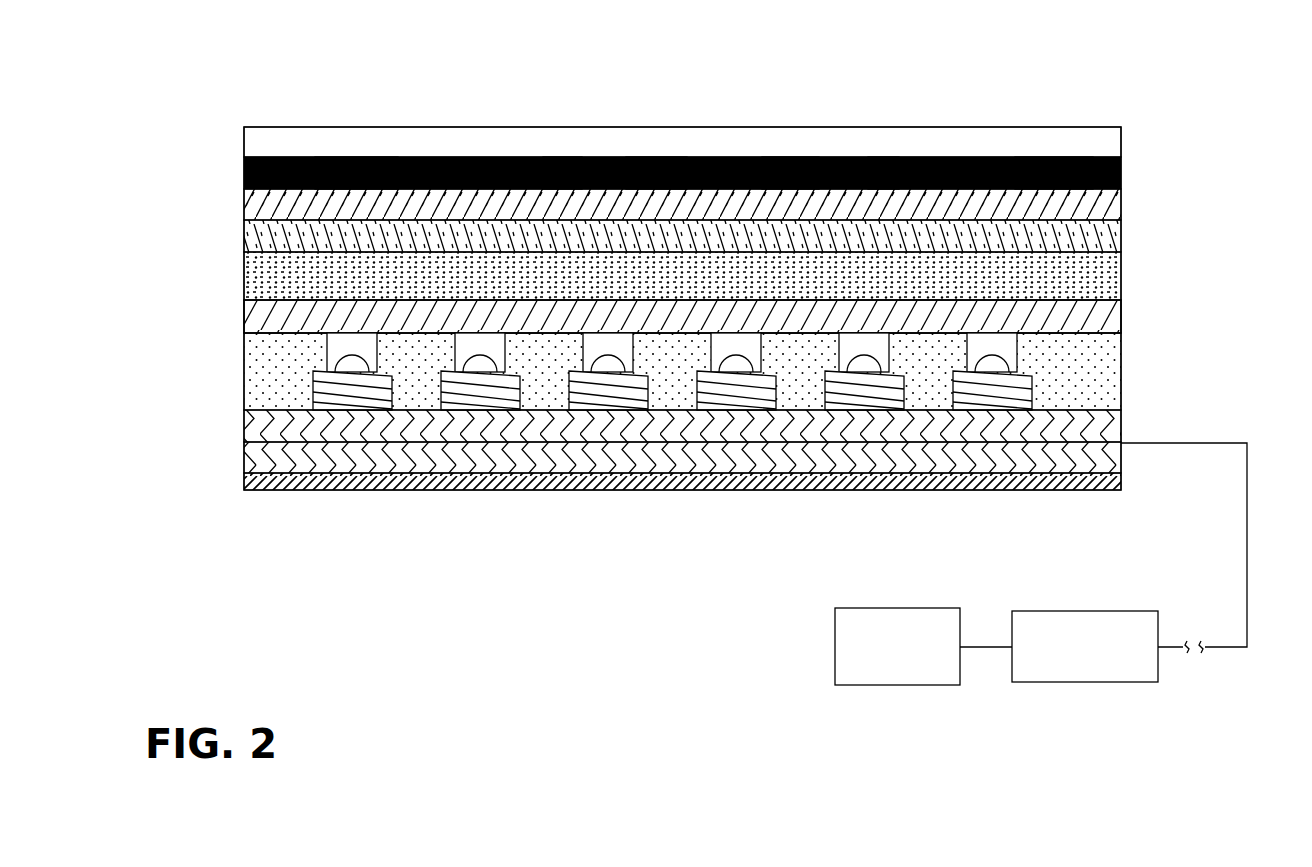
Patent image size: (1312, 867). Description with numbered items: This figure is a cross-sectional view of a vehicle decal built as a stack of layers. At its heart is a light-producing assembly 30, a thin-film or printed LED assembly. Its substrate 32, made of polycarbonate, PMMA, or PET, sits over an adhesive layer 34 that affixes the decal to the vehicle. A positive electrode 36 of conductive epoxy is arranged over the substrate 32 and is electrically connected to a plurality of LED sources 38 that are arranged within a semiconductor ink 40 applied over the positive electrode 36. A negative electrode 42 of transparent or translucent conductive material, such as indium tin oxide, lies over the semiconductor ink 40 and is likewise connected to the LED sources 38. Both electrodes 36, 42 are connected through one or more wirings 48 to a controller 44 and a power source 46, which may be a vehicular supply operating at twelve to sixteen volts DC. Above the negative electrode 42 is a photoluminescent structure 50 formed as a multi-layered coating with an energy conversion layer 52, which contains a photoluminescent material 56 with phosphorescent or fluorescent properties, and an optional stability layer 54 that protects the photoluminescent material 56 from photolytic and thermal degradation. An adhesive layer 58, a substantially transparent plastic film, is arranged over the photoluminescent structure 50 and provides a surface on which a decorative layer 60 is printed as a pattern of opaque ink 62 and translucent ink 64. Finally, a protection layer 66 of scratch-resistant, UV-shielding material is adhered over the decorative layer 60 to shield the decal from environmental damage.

The light-producing assembly 30 is at (180, 222).
The substrate 32 is at (1123, 460).
The adhesive layer 34 is at (1060, 490).
The positive electrode 36 is at (1117, 428).
The LED sources 38 is at (967, 396).
The semiconductor ink 40 is at (1112, 368).
The negative electrode 42 is at (1103, 323).
The controller 44 is at (1068, 682).
The power source 46 is at (878, 685).
The wirings 48 is at (1247, 560).
The photoluminescent structure 50 is at (751, 242).
The energy conversion layer 52 is at (717, 299).
The stability layer 54 is at (1121, 240).
The photoluminescent material 56 is at (1073, 270).
The adhesive layer 58 is at (244, 204).
The decorative layer 60 is at (639, 117).
The opaque ink 62 is at (1110, 157).
The translucent ink 64 is at (1054, 157).
The protection layer 66 is at (254, 127).